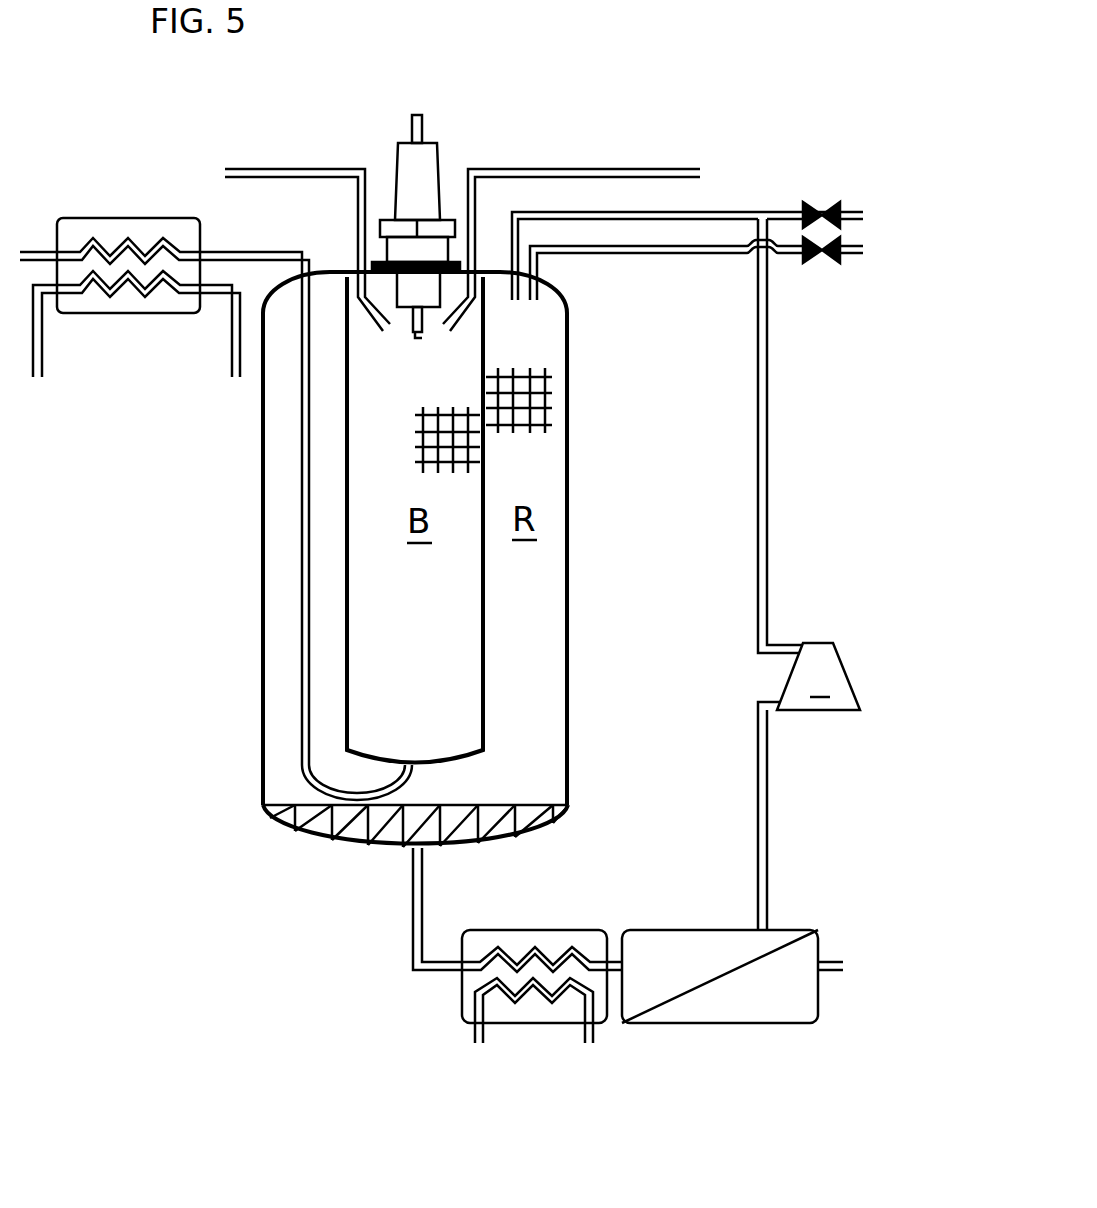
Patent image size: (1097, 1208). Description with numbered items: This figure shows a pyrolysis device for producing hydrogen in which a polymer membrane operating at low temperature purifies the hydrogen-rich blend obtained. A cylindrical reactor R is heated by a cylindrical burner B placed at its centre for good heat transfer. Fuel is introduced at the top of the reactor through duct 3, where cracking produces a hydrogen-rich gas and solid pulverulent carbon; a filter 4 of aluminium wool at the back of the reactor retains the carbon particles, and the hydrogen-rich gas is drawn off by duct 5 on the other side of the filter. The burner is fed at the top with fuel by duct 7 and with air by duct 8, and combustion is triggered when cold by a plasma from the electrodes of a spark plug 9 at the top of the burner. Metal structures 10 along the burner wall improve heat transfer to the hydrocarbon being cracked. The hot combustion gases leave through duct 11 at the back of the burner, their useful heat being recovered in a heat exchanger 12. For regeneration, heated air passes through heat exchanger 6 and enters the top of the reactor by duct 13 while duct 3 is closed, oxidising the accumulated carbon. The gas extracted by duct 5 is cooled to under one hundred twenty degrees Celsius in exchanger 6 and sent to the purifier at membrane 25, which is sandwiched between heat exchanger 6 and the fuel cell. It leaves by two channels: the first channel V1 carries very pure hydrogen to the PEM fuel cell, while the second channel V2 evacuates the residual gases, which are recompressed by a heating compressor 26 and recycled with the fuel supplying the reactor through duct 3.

The duct 3 is at (690, 212).
The filter 4 is at (347, 843).
The duct 5 is at (412, 931).
The heat exchanger 6 is at (497, 930).
The duct 7 is at (503, 168).
The duct 8 is at (240, 169).
The spark plug 9 is at (438, 166).
The metal structures 10 is at (447, 452).
The duct 11 is at (253, 251).
The heat exchanger 12 is at (113, 232).
The duct 13 is at (652, 256).
The polymer membrane 25 is at (778, 1023).
The heating compressor 26 is at (820, 642).
The first channel V1 is at (840, 960).
The second channel V2 is at (767, 813).